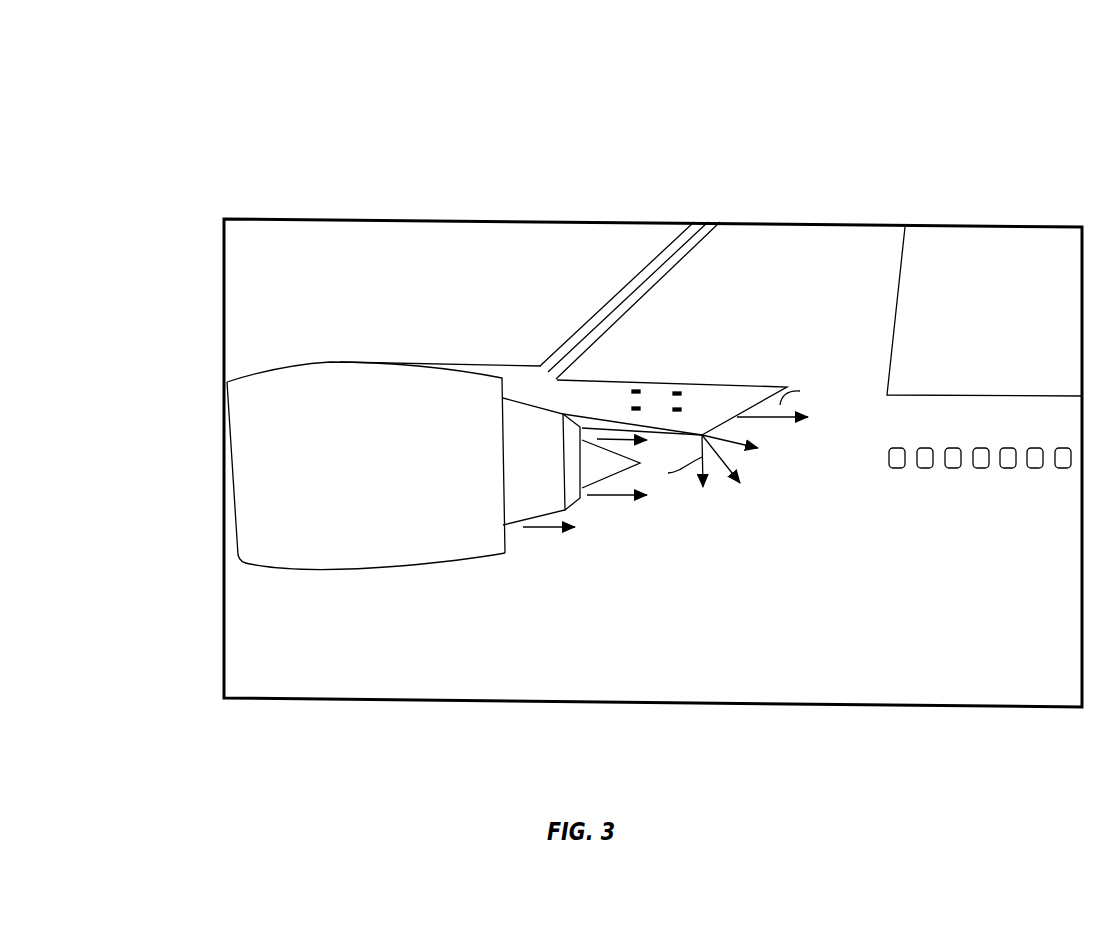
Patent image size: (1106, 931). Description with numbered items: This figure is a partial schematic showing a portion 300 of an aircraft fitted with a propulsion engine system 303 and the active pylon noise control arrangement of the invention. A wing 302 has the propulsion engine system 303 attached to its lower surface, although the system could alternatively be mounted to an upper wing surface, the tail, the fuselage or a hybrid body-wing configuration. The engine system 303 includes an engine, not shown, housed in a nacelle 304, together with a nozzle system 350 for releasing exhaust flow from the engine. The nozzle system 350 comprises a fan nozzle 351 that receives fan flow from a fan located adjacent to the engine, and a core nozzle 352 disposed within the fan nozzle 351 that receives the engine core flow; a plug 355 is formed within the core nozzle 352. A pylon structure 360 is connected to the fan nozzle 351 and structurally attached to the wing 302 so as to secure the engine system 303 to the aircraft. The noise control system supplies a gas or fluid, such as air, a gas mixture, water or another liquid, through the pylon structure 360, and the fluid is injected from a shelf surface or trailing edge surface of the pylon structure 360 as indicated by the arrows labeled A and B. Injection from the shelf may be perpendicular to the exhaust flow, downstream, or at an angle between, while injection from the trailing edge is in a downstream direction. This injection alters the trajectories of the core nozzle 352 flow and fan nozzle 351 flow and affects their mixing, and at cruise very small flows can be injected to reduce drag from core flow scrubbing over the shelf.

The portion of an aircraft 300 is at (350, 75).
The wing 302 is at (820, 250).
The propulsion engine system 303 is at (367, 352).
The nacelle 304 is at (352, 542).
The nozzle system 350 is at (500, 618).
The fan nozzle 351 is at (517, 517).
The core nozzle 352 is at (575, 503).
The plug 355 is at (605, 475).
The pylon structure 360 is at (568, 402).